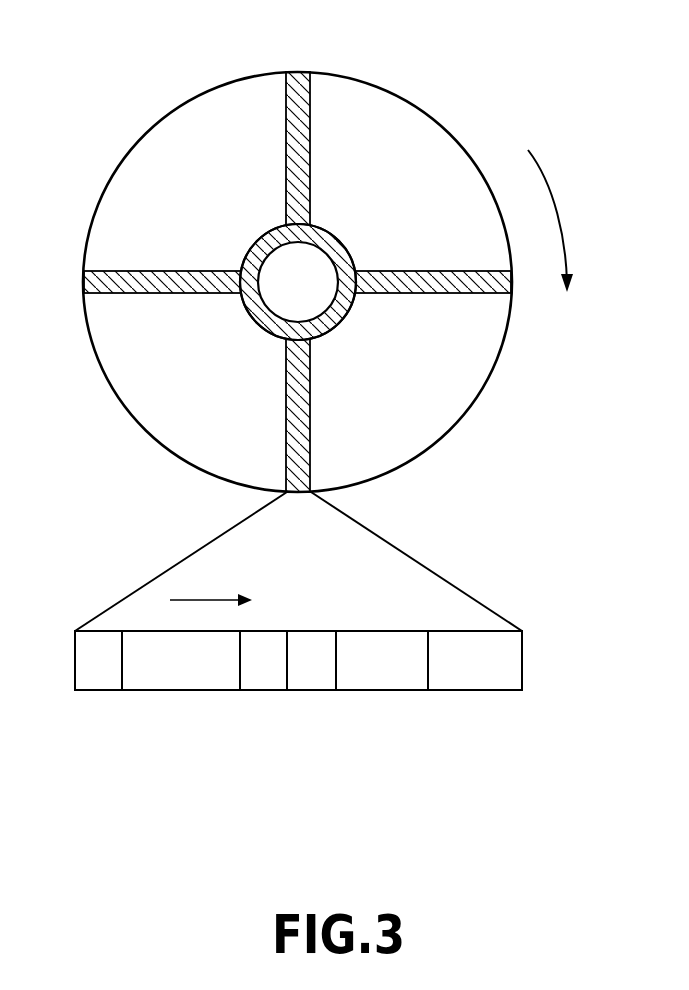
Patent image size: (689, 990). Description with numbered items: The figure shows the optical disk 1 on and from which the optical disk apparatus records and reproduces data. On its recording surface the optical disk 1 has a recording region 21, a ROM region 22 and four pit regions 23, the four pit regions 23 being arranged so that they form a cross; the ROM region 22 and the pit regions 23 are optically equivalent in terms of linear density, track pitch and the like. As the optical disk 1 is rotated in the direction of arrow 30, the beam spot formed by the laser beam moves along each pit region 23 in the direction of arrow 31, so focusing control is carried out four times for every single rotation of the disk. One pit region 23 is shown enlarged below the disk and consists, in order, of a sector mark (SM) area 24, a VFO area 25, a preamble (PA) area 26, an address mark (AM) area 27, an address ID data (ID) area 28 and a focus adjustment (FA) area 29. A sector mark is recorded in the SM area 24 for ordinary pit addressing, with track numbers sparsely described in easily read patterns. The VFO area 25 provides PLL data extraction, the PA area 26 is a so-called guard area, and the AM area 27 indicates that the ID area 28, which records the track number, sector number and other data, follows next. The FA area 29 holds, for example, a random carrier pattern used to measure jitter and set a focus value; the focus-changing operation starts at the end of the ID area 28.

The optical disk 1 is at (309, 257).
The recording region 21 is at (455, 137).
The ROM region 22 is at (343, 322).
The pit region 23 is at (285, 122).
The sector mark (SM) area 24 is at (97, 691).
The VFO area 25 is at (183, 691).
The preamble (PA) area 26 is at (260, 691).
The address mark (AM) area 27 is at (308, 691).
The address ID data (ID) area 28 is at (377, 691).
The focus adjustment (FA) area 29 is at (472, 691).
The arrow indicating disk rotation direction 30 is at (553, 194).
The arrow indicating beam spot movement direction 31 is at (217, 600).